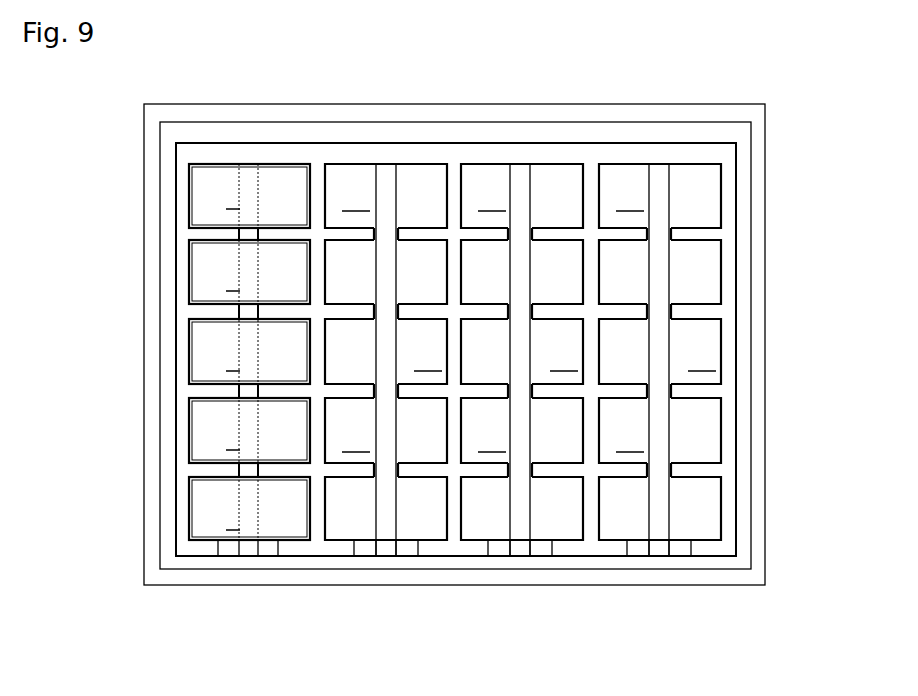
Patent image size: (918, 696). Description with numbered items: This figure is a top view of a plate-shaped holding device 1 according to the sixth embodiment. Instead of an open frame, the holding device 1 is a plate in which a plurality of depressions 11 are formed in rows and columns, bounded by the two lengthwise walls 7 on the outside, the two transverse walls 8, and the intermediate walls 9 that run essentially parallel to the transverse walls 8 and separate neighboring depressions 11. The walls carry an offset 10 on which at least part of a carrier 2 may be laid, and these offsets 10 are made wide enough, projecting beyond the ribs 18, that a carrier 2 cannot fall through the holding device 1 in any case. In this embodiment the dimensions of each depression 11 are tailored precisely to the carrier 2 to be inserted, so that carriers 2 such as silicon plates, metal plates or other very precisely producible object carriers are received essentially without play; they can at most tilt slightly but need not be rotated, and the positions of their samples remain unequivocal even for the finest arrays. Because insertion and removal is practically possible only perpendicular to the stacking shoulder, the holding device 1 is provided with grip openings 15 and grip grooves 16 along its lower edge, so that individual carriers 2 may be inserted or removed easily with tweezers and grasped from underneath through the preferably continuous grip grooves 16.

The holding device 1 is at (70, 144).
The carrier 2 is at (249, 352).
The lengthwise wall 7 is at (387, 116).
The transverse wall 8 is at (155, 239).
The intermediate wall 9 is at (522, 352).
The rib 18 is at (488, 392).
The offset 10 is at (523, 313).
The depression 11 is at (523, 351).
The grip opening 15 is at (249, 550).
The grip groove 16 is at (381, 538).